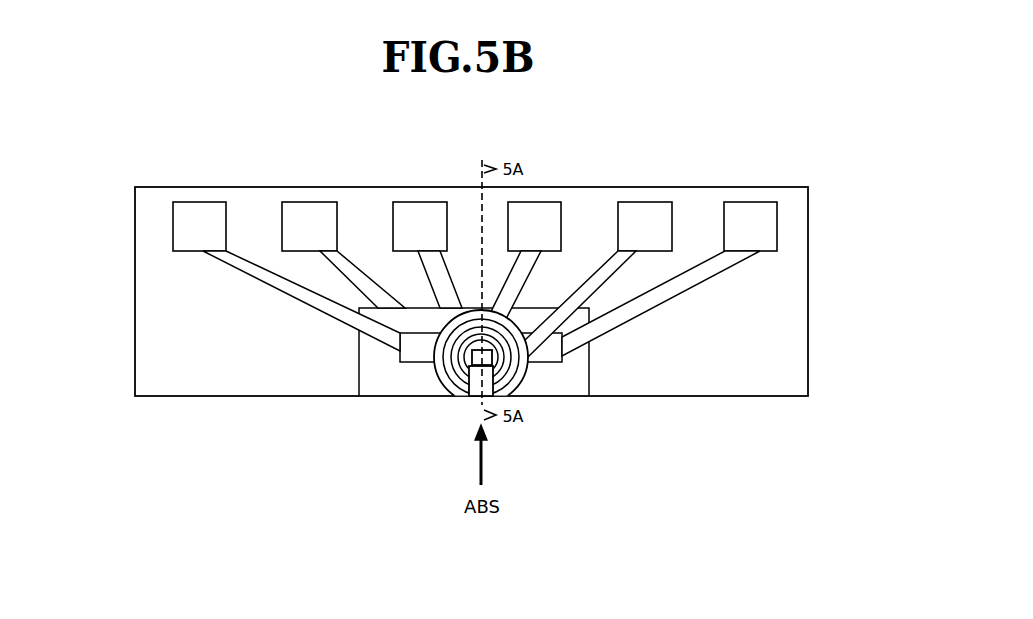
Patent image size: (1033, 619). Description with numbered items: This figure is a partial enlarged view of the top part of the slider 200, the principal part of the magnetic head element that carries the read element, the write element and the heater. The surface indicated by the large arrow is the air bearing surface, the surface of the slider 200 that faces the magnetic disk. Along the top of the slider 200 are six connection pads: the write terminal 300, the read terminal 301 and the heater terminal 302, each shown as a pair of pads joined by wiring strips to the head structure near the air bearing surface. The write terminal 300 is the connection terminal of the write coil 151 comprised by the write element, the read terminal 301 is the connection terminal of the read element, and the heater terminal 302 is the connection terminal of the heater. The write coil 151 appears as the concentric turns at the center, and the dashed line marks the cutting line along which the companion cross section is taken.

The slider 200 is at (787, 187).
The write terminal 300 is at (640, 202).
The read terminal 301 is at (308, 202).
The heater terminal 302 is at (190, 202).
The write coil 151 is at (525, 365).